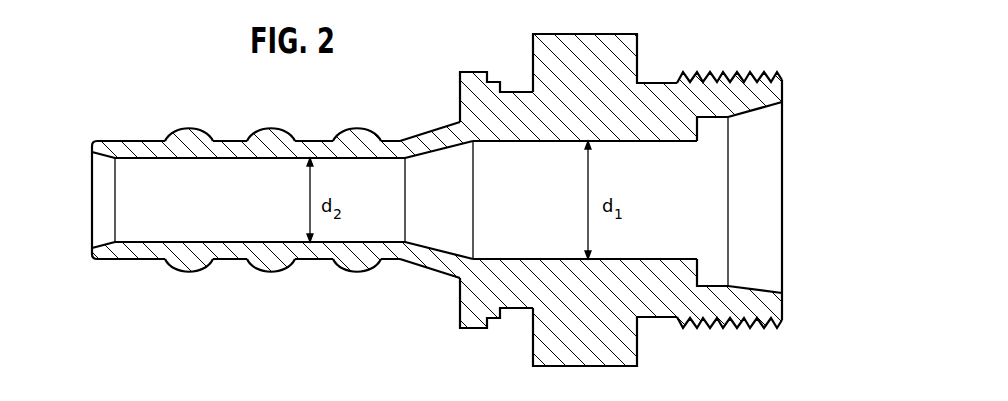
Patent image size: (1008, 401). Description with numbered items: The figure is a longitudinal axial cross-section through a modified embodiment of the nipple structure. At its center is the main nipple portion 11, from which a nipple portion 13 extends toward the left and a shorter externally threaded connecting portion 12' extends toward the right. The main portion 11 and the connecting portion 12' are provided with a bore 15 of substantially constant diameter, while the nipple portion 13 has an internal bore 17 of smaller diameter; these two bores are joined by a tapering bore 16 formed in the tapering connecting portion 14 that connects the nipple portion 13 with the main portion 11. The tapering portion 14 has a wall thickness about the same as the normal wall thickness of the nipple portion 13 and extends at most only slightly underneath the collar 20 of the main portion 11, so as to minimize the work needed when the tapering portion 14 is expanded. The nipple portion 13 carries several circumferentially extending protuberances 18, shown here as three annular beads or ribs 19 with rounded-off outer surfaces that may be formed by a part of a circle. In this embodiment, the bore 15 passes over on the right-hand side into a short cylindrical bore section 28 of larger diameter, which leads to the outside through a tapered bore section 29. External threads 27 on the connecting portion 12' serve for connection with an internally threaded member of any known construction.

The main nipple portion 11 is at (577, 32).
The externally threaded connecting portion 12' is at (729, 52).
The nipple portion 13 is at (227, 137).
The tapering connecting portion 14 is at (442, 260).
The bore 15 is at (630, 258).
The tapering bore 16 is at (426, 147).
The internal bore 17 is at (145, 241).
The protuberances 18 is at (196, 264).
The annular beads 19 is at (190, 127).
The collar 20 is at (463, 82).
The external threads 27 is at (710, 329).
The cylindrical bore section 28 is at (708, 283).
The tapered bore section 29 is at (765, 290).